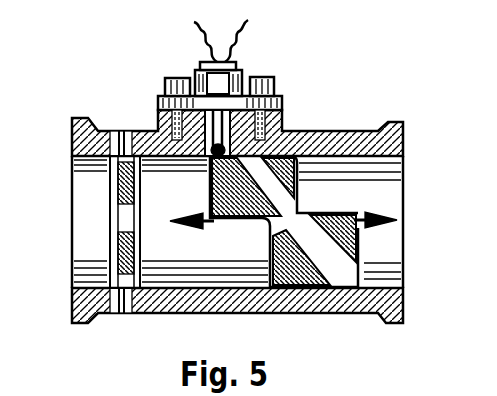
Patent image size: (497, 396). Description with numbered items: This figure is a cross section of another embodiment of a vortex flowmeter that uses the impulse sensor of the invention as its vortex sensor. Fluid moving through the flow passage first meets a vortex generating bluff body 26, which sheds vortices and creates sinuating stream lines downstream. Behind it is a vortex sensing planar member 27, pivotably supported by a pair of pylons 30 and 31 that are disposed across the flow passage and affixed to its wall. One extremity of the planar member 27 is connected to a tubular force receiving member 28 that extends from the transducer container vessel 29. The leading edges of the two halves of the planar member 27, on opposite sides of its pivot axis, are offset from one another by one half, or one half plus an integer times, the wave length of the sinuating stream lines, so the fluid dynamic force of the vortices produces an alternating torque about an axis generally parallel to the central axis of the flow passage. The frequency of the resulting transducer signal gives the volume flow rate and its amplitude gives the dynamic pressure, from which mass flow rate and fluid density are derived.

The vortex generating bluff body 26 is at (127, 221).
The vortex sensing planar member 27 is at (276, 203).
The tubular force receiving member 28 is at (203, 157).
The transducer container vessel 29 is at (247, 77).
The pylon 30 is at (173, 230).
The pylon 31 is at (393, 232).